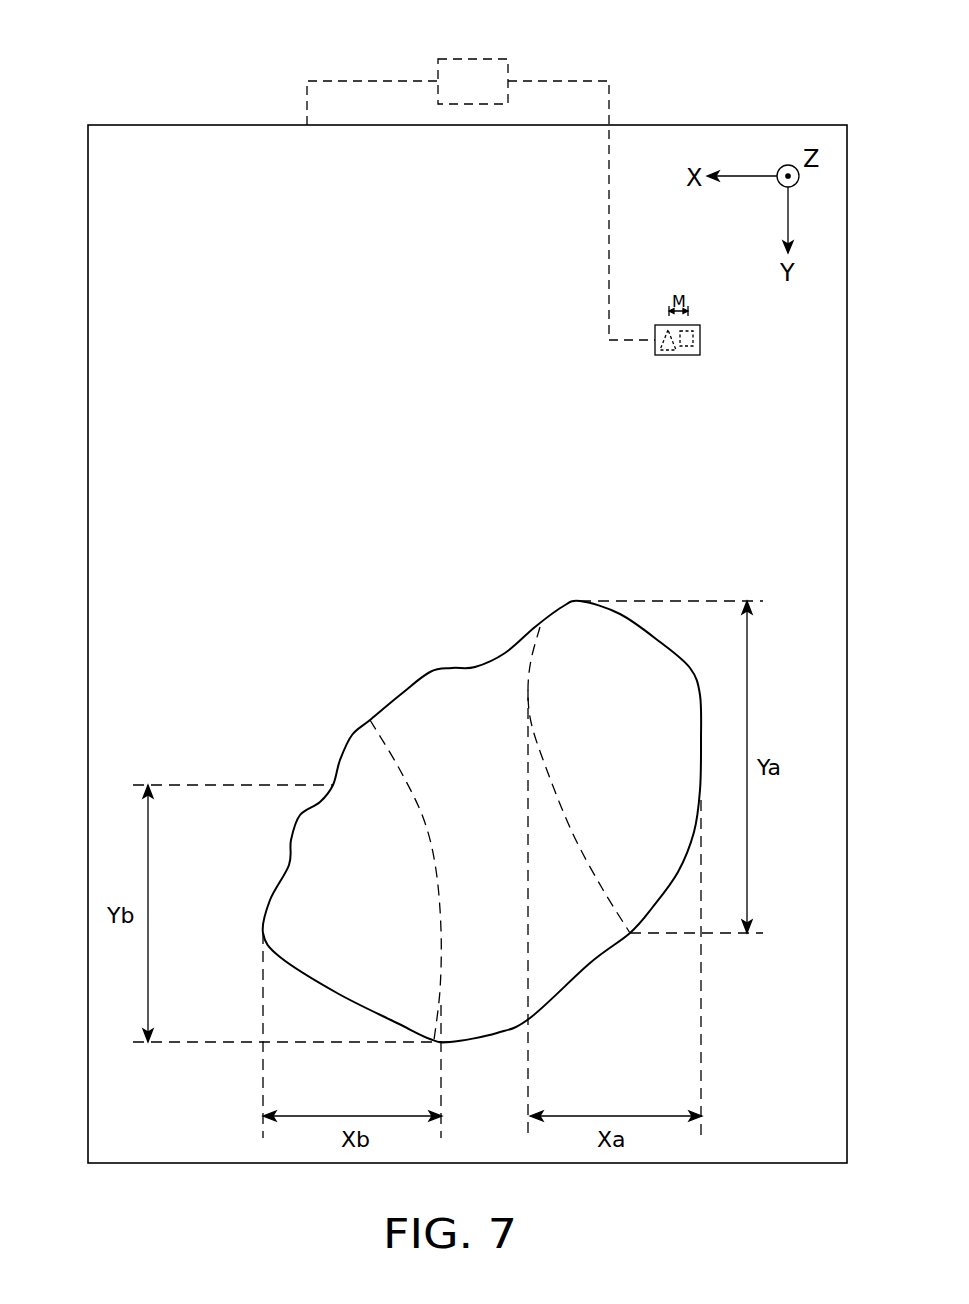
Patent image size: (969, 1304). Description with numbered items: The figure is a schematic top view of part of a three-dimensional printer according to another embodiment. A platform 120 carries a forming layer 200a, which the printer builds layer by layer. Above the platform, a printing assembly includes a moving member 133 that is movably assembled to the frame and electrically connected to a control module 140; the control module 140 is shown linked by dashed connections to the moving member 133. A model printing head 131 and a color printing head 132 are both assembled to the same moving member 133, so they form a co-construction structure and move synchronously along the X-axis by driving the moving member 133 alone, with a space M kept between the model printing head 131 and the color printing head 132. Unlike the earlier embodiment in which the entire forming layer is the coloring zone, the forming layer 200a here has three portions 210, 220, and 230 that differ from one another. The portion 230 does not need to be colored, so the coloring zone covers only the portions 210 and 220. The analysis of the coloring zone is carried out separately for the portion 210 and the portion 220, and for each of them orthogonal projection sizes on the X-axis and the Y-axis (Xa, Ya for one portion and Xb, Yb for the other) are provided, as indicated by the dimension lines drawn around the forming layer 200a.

The platform 120 is at (214, 125).
The control module 140 is at (492, 94).
The model printing head 131 is at (657, 340).
The color printing head 132 is at (700, 340).
The moving member 133 is at (693, 325).
The forming layer 200a is at (792, 6).
The portion 210 is at (576, 624).
The portion 220 is at (335, 826).
The portion 230 is at (417, 722).